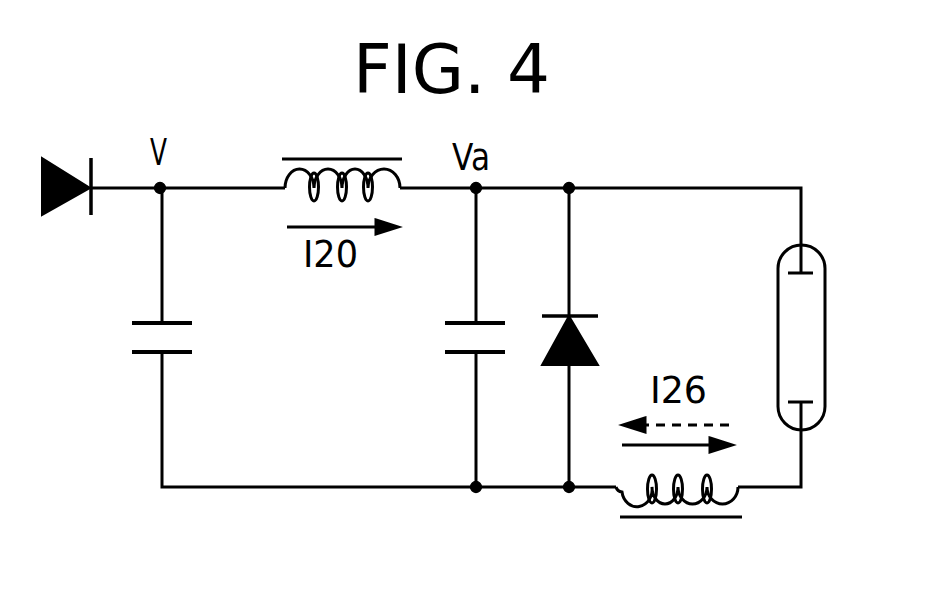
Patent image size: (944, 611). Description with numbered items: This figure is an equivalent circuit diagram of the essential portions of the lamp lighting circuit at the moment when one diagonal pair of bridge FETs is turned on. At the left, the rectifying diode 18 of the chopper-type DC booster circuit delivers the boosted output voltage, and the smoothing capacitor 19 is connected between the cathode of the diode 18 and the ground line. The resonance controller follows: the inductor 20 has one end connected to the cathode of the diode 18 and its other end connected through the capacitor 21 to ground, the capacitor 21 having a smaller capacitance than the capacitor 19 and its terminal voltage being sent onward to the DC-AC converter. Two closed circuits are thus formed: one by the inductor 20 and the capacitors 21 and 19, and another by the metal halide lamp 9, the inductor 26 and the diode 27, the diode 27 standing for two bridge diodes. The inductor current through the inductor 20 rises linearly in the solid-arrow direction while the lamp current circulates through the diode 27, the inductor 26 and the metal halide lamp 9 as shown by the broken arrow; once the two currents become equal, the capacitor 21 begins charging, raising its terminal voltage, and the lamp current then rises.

The rectifying diode 18 is at (68, 172).
The smoothing capacitor 19 is at (142, 355).
The inductor 20 is at (283, 182).
The capacitor 21 is at (455, 357).
The inductor 26 is at (618, 497).
The diode 27 is at (588, 317).
The metal halide lamp 9 is at (824, 327).